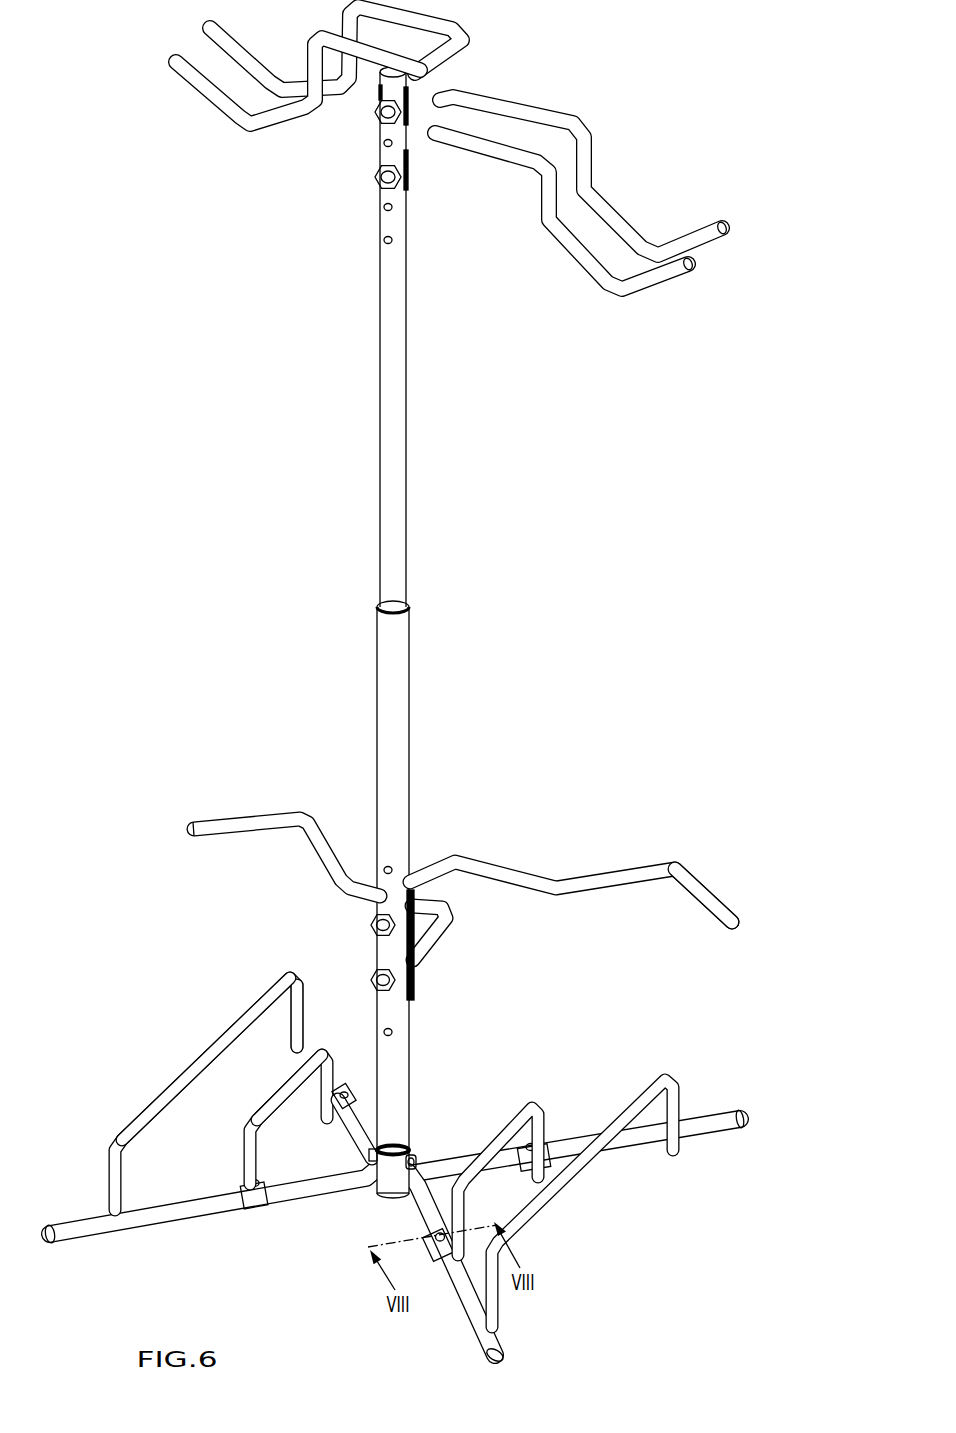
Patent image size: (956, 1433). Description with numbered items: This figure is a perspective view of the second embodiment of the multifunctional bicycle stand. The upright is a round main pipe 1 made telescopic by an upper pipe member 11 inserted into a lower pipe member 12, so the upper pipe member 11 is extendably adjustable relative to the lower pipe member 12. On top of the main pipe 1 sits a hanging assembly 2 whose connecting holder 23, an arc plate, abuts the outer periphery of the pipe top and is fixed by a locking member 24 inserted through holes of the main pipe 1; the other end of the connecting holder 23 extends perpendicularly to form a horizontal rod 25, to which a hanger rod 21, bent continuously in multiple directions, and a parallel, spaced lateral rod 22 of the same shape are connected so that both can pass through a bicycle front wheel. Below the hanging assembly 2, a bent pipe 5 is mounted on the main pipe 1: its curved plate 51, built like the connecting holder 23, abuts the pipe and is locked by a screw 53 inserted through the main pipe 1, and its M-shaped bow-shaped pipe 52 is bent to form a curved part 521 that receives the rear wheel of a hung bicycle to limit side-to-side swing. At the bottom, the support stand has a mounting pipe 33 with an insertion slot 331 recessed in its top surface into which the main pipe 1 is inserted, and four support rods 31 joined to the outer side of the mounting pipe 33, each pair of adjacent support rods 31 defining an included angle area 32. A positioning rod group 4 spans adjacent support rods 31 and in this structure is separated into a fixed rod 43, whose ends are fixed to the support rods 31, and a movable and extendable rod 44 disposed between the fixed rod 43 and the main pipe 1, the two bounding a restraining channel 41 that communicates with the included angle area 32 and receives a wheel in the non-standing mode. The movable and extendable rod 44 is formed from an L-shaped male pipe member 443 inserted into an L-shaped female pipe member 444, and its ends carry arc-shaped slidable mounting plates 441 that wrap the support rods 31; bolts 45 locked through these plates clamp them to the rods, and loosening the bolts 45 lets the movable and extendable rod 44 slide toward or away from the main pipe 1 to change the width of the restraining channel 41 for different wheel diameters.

The main pipe 1 is at (314, 608).
The upper pipe member 11 is at (387, 498).
The lower pipe member 12 is at (385, 640).
The hanging assembly 2 is at (466, 188).
The hanger rod 21 is at (547, 117).
The lateral rod 22 is at (560, 268).
The connecting holder 23 is at (406, 190).
The locking member 24 is at (380, 182).
The horizontal rod 25 is at (440, 112).
The bent pipe 5 is at (466, 880).
The curved plate 51 is at (406, 880).
The bow-shaped pipe 52 is at (507, 870).
The curved part 521 is at (675, 878).
The screw 53 is at (380, 930).
The support rod 31 is at (143, 1218).
The included angle area 32 is at (450, 1205).
The mounting pipe 33 is at (379, 1171).
The insertion slot 331 is at (400, 1140).
The positioning rod group 4 is at (381, 1118).
The restraining channel 41 is at (265, 1057).
The fixed rod 43 is at (262, 1000).
The movable and extendable rod 44 is at (198, 1097).
The slidable mounting plate 441 is at (240, 1217).
The male pipe member 443 is at (243, 1147).
The female pipe member 444 is at (263, 1107).
The bolt 45 is at (345, 1088).